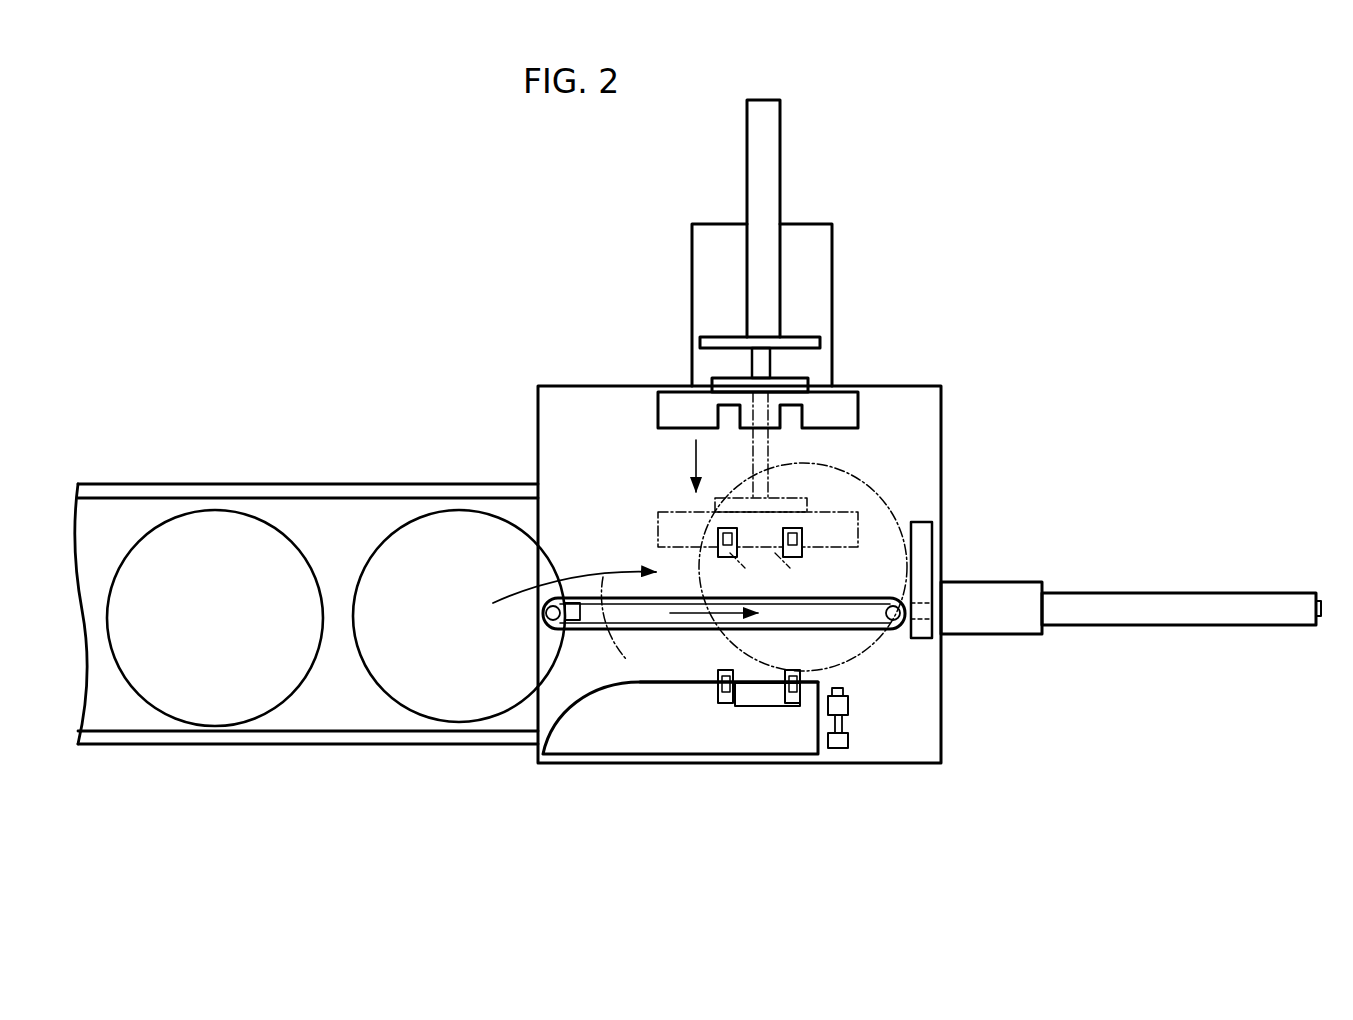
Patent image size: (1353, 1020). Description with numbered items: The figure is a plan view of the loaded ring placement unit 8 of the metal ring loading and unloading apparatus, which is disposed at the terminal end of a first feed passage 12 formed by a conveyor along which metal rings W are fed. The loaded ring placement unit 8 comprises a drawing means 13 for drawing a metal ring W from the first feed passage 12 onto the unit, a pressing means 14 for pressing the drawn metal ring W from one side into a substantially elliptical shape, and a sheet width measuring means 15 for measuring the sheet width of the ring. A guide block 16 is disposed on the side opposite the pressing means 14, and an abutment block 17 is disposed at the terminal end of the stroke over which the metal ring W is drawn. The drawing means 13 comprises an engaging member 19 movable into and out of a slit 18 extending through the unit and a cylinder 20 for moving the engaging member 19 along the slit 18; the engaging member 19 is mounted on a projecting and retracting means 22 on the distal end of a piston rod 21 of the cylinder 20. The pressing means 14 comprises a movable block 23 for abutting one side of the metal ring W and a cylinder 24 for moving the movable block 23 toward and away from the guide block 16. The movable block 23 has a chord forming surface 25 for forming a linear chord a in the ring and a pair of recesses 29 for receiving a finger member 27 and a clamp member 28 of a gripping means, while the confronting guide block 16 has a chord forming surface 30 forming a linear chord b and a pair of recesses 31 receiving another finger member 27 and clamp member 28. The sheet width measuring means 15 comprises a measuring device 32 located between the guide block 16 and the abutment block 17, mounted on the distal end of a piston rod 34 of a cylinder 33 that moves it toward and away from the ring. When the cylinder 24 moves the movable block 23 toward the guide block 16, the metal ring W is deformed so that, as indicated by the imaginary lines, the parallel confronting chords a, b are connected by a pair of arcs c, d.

The loaded ring placement unit 8 is at (907, 462).
The first feed passage 12 is at (363, 483).
The drawing means 13 is at (857, 636).
The pressing means 14 is at (815, 372).
The sheet width measuring means 15 is at (896, 756).
The guide block 16 is at (790, 737).
The abutment block 17 is at (919, 522).
The slit 18 is at (642, 628).
The engaging member 19 is at (543, 618).
The cylinder 20 is at (1111, 593).
The piston rod 21 is at (655, 614).
The projecting and retracting means 22 is at (577, 620).
The movable block 23 is at (845, 413).
The cylinder 24 is at (770, 150).
The chord forming surface 25 is at (683, 429).
The finger member 27 is at (803, 537).
The clamp member 28 is at (787, 693).
The recesses 29 is at (728, 407).
The chord forming surface 30 is at (692, 683).
The recesses 31 is at (790, 705).
The measuring device 32 is at (847, 703).
The cylinder 33 is at (842, 748).
The piston rod 34 is at (850, 737).
The metal ring W is at (300, 547).
The linear chord a is at (773, 547).
The linear chord b is at (727, 698).
The arc c is at (650, 550).
The arc d is at (890, 660).